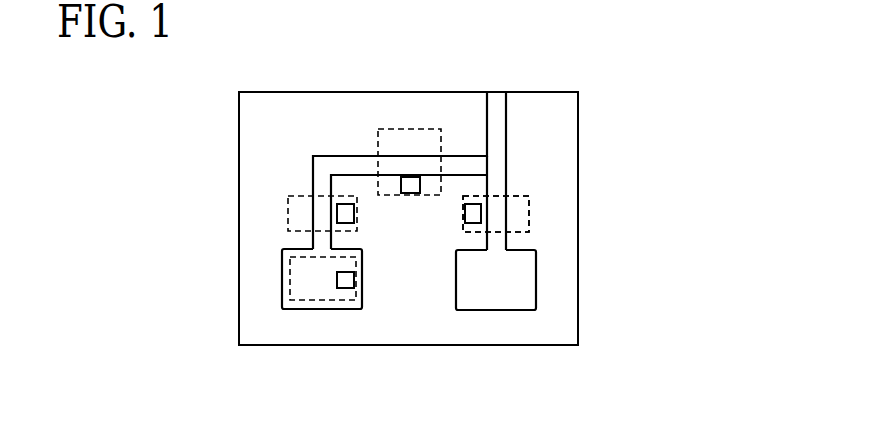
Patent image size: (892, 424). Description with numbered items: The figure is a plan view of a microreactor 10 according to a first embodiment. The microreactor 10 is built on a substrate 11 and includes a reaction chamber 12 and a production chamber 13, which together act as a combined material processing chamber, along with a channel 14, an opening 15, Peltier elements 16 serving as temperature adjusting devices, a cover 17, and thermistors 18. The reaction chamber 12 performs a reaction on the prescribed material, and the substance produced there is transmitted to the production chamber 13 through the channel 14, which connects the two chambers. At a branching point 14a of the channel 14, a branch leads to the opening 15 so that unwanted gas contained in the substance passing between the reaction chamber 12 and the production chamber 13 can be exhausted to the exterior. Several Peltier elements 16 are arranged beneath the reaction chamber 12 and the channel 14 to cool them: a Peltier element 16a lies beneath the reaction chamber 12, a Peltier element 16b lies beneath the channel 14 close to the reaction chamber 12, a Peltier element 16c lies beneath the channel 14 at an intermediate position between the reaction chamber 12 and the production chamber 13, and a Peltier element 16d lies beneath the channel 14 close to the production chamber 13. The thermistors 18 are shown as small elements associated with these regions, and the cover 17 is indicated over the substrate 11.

The microreactor 10 is at (658, 152).
The substrate 11 is at (578, 316).
The reaction chamber 12 is at (322, 310).
The production chamber 13 is at (497, 311).
The channel 14 is at (345, 156).
The branching point 14a is at (494, 167).
The opening 15 is at (497, 92).
The Peltier elements 16 is at (530, 188).
The Peltier element 16a is at (290, 277).
The Peltier element 16b is at (288, 211).
The Peltier element 16c is at (410, 128).
The Peltier element 16d is at (530, 214).
The cover 17 is at (557, 268).
The thermistors 18 is at (465, 212).